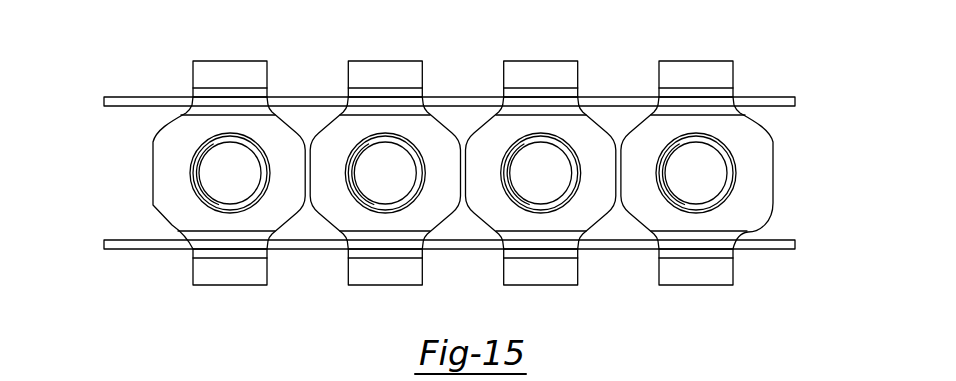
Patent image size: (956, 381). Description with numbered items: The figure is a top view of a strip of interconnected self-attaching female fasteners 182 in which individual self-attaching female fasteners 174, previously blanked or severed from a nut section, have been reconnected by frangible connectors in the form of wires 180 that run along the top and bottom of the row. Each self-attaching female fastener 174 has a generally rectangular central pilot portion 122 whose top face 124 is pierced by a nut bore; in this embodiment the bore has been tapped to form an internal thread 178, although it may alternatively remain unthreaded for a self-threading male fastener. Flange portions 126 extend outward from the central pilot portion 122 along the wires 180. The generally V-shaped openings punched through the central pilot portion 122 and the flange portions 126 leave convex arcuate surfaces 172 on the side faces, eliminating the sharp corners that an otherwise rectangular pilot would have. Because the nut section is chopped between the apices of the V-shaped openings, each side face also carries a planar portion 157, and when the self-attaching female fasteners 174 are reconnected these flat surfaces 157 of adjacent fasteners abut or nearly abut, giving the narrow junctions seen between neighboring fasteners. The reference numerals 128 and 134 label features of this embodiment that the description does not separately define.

The central pilot portion 122 is at (769, 133).
The top face 124 is at (203, 143).
The flange portion 126 is at (704, 275).
The upper terminal plate 128 is at (694, 65).
The terminal tab 134 is at (542, 97).
The planar portion 157 is at (457, 190).
The convex arcuate surface 172 is at (178, 226).
The self-attaching female fastener 174 is at (367, 56).
The internal thread 178 is at (256, 173).
The wire 180 is at (760, 96).
The strip of interconnected self-attaching female fasteners 182 is at (167, 60).